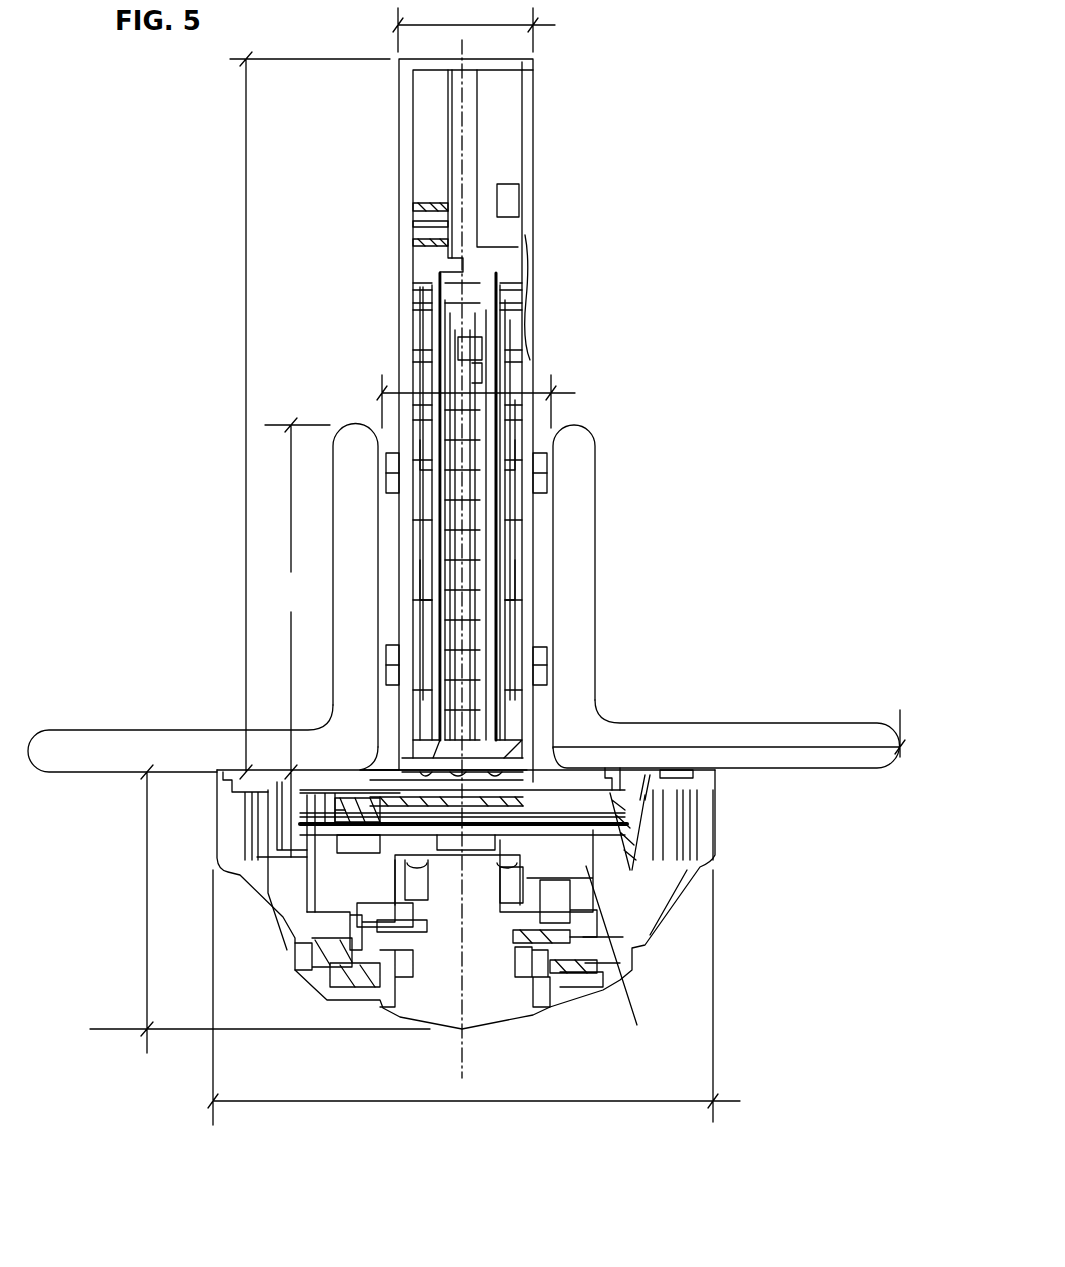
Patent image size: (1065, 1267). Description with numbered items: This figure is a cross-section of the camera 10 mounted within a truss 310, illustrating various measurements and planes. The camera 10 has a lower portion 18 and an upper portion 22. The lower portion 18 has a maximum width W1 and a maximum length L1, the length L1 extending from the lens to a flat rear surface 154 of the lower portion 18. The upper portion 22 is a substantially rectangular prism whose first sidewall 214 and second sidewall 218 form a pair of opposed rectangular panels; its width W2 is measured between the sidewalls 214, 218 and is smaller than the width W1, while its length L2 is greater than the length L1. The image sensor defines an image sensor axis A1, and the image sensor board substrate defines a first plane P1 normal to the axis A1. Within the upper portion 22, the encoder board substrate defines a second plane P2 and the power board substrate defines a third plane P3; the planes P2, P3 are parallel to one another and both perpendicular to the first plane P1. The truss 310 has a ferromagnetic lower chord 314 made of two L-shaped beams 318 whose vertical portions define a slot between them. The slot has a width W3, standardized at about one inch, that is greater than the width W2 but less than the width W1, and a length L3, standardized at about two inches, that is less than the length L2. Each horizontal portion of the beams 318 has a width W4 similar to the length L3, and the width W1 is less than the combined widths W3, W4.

The camera 10 is at (655, 108).
The upper portion 22 is at (378, 212).
The first sidewall 214 is at (408, 103).
The second sidewall 218 is at (530, 120).
The truss 310 is at (740, 465).
The lower chord 314 is at (712, 572).
The beams 318 is at (80, 732).
The rear surface 154 is at (655, 768).
The lower portion 18 is at (748, 962).
The image sensor axis A1 is at (470, 1052).
The first plane P1 is at (625, 962).
The second plane P2 is at (498, 317).
The third plane P3 is at (433, 337).
The length L1 is at (260, 930).
The length L2 is at (245, 408).
The length L3 is at (297, 637).
The width W1 is at (496, 997).
The width W2 is at (499, 30).
The width W3 is at (500, 401).
The width W4 is at (818, 740).